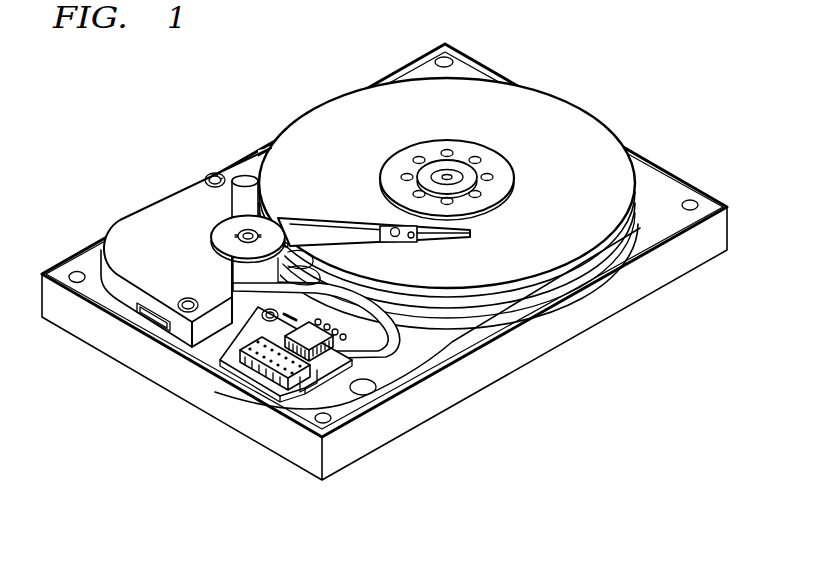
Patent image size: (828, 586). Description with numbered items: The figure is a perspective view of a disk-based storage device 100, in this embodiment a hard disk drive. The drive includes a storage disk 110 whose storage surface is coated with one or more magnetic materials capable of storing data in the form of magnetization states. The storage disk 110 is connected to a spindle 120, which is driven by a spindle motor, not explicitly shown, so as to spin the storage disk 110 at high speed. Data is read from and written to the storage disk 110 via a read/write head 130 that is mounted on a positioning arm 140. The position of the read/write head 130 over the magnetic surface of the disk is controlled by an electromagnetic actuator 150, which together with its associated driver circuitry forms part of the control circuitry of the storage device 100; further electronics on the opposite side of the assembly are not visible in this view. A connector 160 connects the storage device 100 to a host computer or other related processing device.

The disk-based storage device 100 is at (166, 90).
The storage disk 110 is at (561, 114).
The spindle 120 is at (468, 172).
The read/write head 130 is at (440, 233).
The positioning arm 140 is at (308, 223).
The electromagnetic actuator 150 is at (148, 222).
The connector 160 is at (263, 360).